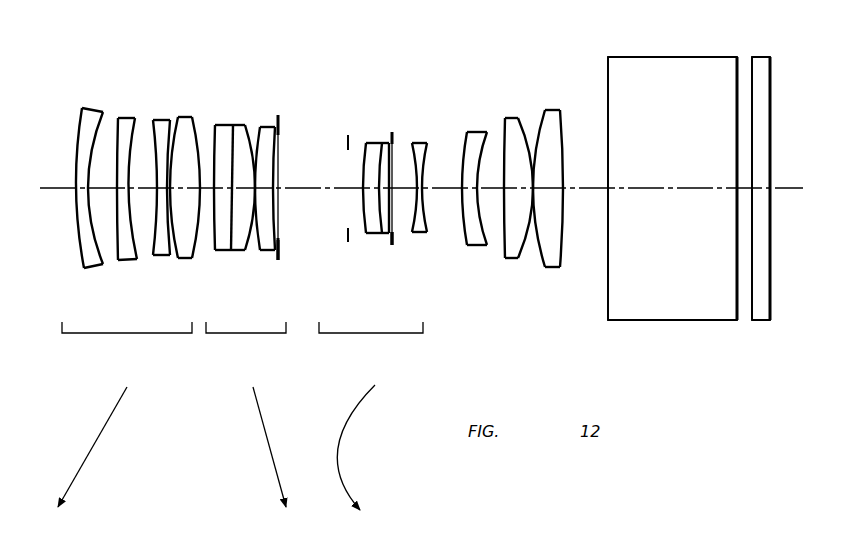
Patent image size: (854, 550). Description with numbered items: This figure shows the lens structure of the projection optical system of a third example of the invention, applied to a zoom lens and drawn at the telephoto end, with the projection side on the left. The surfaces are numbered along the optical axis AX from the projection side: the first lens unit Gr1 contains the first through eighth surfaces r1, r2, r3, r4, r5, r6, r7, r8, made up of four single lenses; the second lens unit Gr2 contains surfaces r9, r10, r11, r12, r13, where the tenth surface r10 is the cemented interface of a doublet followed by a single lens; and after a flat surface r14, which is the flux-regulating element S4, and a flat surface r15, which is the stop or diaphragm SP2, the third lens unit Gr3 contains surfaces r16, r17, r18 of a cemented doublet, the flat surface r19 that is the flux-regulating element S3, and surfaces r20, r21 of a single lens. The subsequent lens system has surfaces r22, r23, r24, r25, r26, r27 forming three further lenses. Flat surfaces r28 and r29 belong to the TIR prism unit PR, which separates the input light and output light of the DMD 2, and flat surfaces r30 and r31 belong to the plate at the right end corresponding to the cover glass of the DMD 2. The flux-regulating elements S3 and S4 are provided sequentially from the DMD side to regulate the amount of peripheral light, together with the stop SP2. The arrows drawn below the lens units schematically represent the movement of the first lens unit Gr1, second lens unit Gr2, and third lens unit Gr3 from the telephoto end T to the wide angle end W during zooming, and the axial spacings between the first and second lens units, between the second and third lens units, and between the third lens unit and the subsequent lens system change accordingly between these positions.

The first surface r1 is at (80, 142).
The second surface r2 is at (105, 249).
The third surface r3 is at (112, 132).
The fourth surface r4 is at (137, 248).
The fifth surface r5 is at (148, 132).
The sixth surface r6 is at (165, 242).
The seventh surface r7 is at (182, 127).
The eighth surface r8 is at (195, 247).
The ninth surface r9 is at (212, 140).
The tenth surface r10 is at (224, 125).
The eleventh surface r11 is at (250, 242).
The twelfth surface r12 is at (254, 126).
The thirteenth surface r13 is at (278, 173).
The fourteenth surface r14 is at (280, 115).
The fifteenth surface r15 is at (347, 143).
The sixteenth surface r16 is at (362, 203).
The seventeenth surface r17 is at (374, 223).
The eighteenth surface r18 is at (391, 152).
The nineteenth surface r19 is at (390, 133).
The twentieth surface r20 is at (410, 223).
The twenty-first surface r21 is at (426, 160).
The twenty-second surface r22 is at (462, 202).
The twenty-third surface r23 is at (487, 142).
The twenty-fourth surface r24 is at (503, 250).
The twenty-fifth surface r25 is at (522, 128).
The twenty-sixth surface r26 is at (537, 257).
The twenty-seventh surface r27 is at (562, 127).
The twenty-eighth surface r28 is at (607, 274).
The twenty-ninth surface r29 is at (738, 70).
The thirtieth surface r30 is at (750, 305).
The thirty-first surface r31 is at (772, 112).
The optical axis AX is at (54, 193).
The flux-regulating element S3 is at (392, 246).
The flux-regulating element S4 is at (278, 257).
The stop SP2 is at (347, 237).
The TIR prism unit PR is at (672, 322).
The DMD 2 is at (763, 260).
The first lens unit Gr1 is at (126, 342).
The second lens unit Gr2 is at (245, 342).
The third lens unit Gr3 is at (371, 342).
The telephoto end T is at (219, 436).
The wide angle end W is at (208, 527).